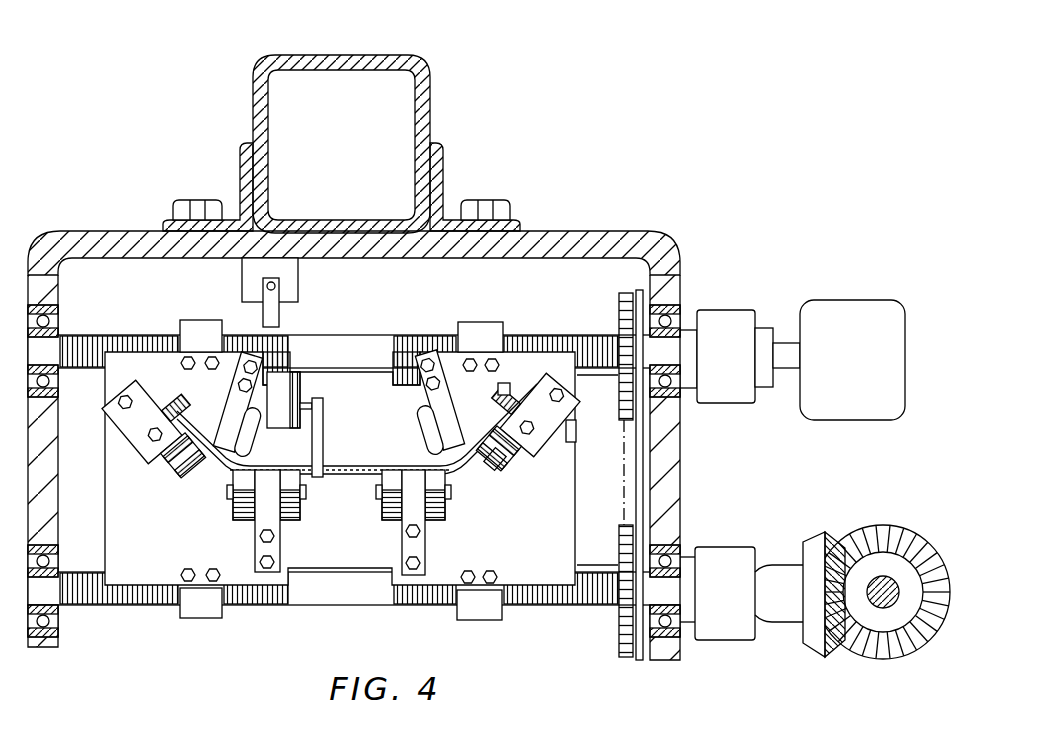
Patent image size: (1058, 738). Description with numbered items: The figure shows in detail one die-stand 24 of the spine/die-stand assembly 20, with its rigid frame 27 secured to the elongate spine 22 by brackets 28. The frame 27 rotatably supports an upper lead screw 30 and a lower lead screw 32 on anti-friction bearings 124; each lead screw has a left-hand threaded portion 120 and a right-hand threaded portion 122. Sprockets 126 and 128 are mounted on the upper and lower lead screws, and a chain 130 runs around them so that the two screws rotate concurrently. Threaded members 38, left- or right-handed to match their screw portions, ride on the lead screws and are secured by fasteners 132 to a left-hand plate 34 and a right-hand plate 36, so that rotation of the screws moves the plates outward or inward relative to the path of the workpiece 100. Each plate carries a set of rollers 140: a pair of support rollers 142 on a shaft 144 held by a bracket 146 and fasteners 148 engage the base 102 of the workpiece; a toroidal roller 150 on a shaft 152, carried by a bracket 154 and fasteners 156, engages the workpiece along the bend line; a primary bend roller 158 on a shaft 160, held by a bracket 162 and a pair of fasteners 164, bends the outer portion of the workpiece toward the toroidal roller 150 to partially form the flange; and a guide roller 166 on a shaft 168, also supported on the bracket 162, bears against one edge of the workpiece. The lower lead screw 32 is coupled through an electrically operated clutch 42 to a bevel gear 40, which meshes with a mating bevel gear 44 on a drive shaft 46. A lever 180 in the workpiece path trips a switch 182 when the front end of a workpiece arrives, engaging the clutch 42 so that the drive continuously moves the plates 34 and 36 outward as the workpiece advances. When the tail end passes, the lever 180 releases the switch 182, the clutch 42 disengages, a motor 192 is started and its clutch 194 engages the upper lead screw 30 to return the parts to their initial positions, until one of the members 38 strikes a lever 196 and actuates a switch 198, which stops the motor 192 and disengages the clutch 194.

The spine/die-stand assembly 20 is at (178, 68).
The spine 22 is at (250, 96).
The die-stand 24 is at (97, 208).
The frame 27 is at (682, 458).
The bracket 28 is at (240, 176).
The upper lead screw 30 is at (586, 333).
The lower lead screw 32 is at (608, 616).
The left-hand plate 34 is at (103, 509).
The right-hand plate 36 is at (578, 515).
The member 38 is at (197, 320).
The bevel gear 40 is at (815, 640).
The clutch 42 is at (728, 568).
The bevel gear 44 is at (918, 640).
The drive shaft 46 is at (880, 600).
The workpiece 100 is at (316, 466).
The base 102 is at (360, 476).
The left-hand threaded portion 120 is at (542, 335).
The right-hand threaded portion 122 is at (105, 338).
The anti-friction bearing 124 is at (58, 318).
The sprocket 126 is at (622, 297).
The sprocket 128 is at (622, 556).
The chain 130 is at (620, 482).
The fastener 132 is at (212, 357).
The set of rollers 140 is at (262, 437).
The support roller 142 is at (237, 492).
The shaft 144 is at (380, 498).
The bracket 146 is at (418, 512).
The fastener 148 is at (400, 553).
The toroidal roller 150 is at (418, 404).
The shaft 152 is at (440, 445).
The bracket 154 is at (453, 398).
The fastener 156 is at (430, 396).
The primary bend roller 158 is at (178, 458).
The shaft 160 is at (462, 492).
The bracket 162 is at (538, 445).
The fastener 164 is at (570, 430).
The guide roller 166 is at (155, 390).
The shaft 168 is at (506, 388).
The lever 180 is at (320, 430).
The switch 182 is at (292, 402).
The motor 192 is at (860, 330).
The clutch 194 is at (725, 330).
The lever 196 is at (263, 312).
The switch 198 is at (298, 290).